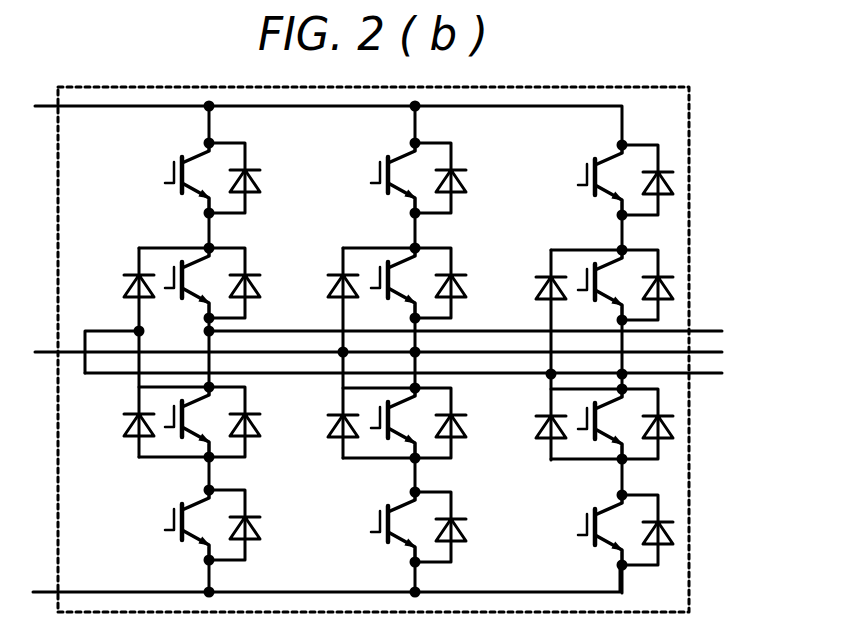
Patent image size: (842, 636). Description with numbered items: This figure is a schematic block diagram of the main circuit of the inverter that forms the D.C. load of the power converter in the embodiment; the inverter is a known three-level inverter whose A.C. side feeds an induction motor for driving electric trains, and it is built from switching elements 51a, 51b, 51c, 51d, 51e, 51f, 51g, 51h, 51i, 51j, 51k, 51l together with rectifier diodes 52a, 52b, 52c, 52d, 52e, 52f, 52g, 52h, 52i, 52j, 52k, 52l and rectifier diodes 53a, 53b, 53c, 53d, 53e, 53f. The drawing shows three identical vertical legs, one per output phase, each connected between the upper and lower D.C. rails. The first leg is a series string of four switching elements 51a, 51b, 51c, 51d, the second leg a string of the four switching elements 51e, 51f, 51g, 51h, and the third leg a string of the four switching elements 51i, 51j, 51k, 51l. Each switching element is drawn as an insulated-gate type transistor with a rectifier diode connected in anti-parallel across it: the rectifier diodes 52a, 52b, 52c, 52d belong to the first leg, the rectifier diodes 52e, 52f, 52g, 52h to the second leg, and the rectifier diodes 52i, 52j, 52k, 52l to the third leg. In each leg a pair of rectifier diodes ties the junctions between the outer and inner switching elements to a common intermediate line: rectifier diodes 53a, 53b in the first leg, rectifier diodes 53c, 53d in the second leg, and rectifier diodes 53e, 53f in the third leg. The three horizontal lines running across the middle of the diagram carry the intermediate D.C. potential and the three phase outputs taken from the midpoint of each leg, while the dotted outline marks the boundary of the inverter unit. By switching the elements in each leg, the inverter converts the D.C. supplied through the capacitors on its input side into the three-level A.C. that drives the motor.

The switching element 51a is at (178, 171).
The switching element 51b is at (197, 266).
The switching element 51c is at (179, 416).
The switching element 51d is at (178, 520).
The switching element 51e is at (384, 173).
The switching element 51f is at (388, 266).
The switching element 51g is at (398, 438).
The switching element 51h is at (377, 528).
The switching element 51i is at (590, 176).
The switching element 51j is at (588, 267).
The switching element 51k is at (600, 446).
The switching element 51l is at (585, 537).
The rectifier diode 52a is at (262, 186).
The rectifier diode 52b is at (260, 288).
The rectifier diode 52c is at (260, 428).
The rectifier diode 52d is at (262, 531).
The rectifier diode 52e is at (468, 188).
The rectifier diode 52f is at (465, 290).
The rectifier diode 52g is at (465, 430).
The rectifier diode 52h is at (462, 538).
The rectifier diode 52i is at (678, 188).
The rectifier diode 52j is at (678, 294).
The rectifier diode 52k is at (678, 430).
The rectifier diode 52l is at (674, 532).
The rectifier diode 53a is at (128, 284).
The rectifier diode 53b is at (128, 425).
The rectifier diode 53c is at (334, 280).
The rectifier diode 53d is at (335, 430).
The rectifier diode 53e is at (541, 280).
The rectifier diode 53f is at (541, 436).